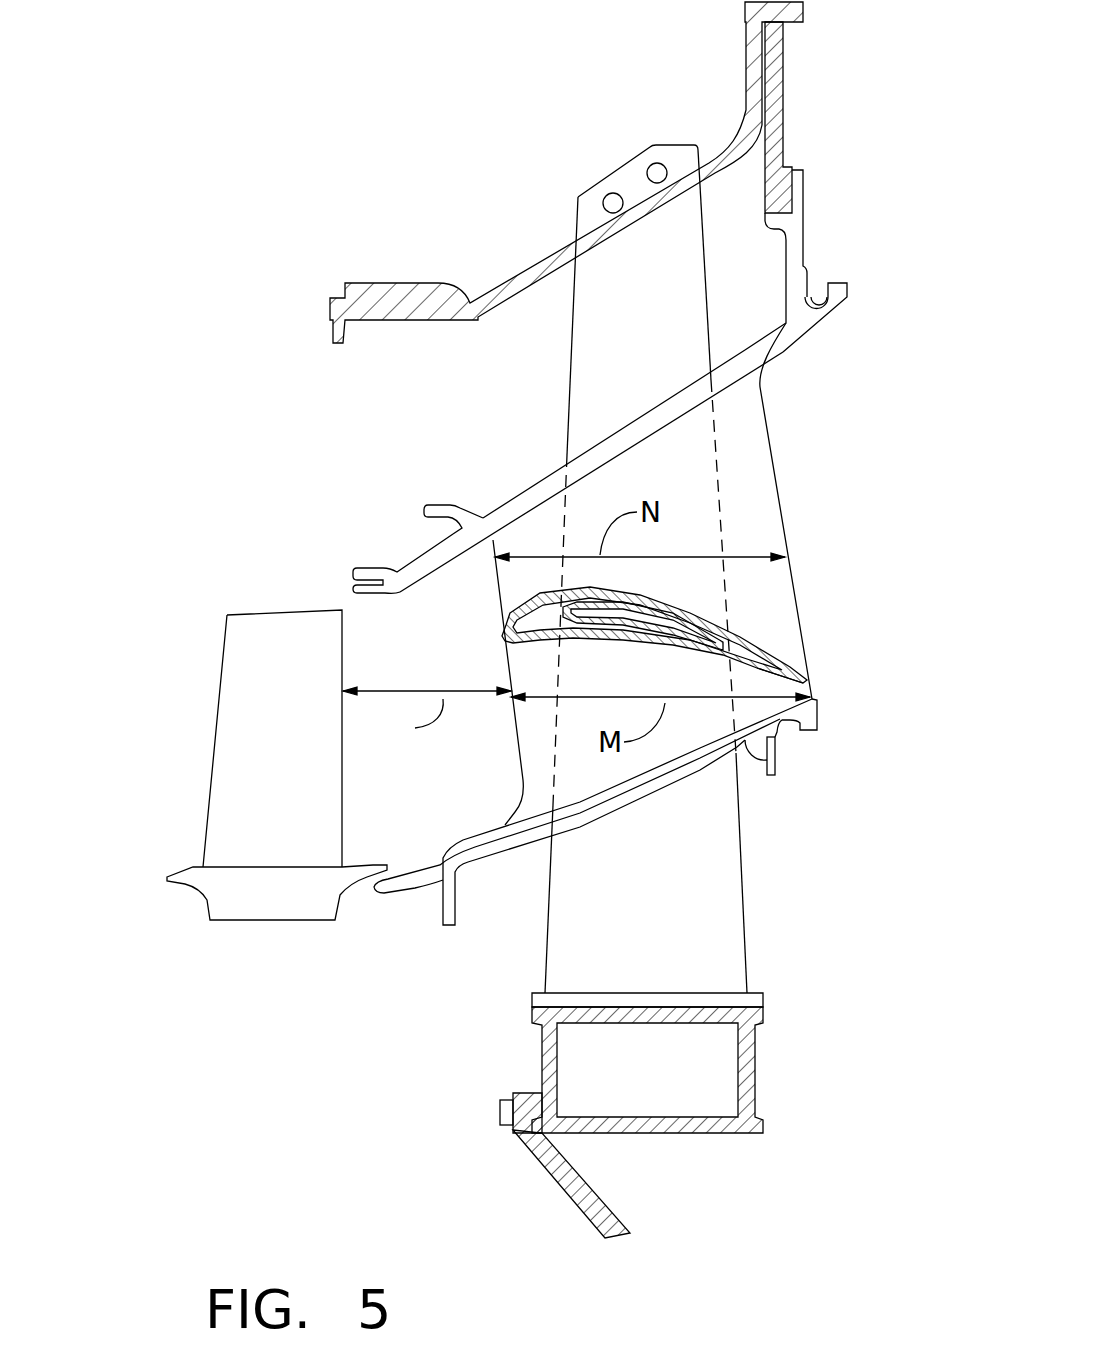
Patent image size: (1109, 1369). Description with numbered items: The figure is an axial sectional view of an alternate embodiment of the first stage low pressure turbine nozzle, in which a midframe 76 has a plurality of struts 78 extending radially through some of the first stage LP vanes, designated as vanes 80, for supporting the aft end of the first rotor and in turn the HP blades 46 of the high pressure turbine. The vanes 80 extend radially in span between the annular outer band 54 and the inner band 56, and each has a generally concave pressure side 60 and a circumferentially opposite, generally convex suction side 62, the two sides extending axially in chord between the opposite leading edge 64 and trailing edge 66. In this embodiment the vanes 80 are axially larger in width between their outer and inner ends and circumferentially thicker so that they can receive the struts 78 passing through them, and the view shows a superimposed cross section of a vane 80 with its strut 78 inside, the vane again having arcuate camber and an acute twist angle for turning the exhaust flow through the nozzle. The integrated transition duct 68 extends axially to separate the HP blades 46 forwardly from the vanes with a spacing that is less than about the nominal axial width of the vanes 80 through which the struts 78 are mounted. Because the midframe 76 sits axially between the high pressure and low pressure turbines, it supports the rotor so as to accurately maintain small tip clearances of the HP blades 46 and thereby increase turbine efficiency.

The HP blades 46 is at (293, 759).
The outer band 54 is at (758, 389).
The inner band 56 is at (505, 826).
The pressure side 60 is at (636, 686).
The suction side 62 is at (662, 602).
The leading edge 64 is at (497, 598).
The trailing edge 66 is at (776, 460).
The integrated transition duct 68 is at (449, 671).
The midframe 76 is at (752, 958).
The struts 78 is at (661, 327).
The first stage LP vanes 80 is at (785, 650).